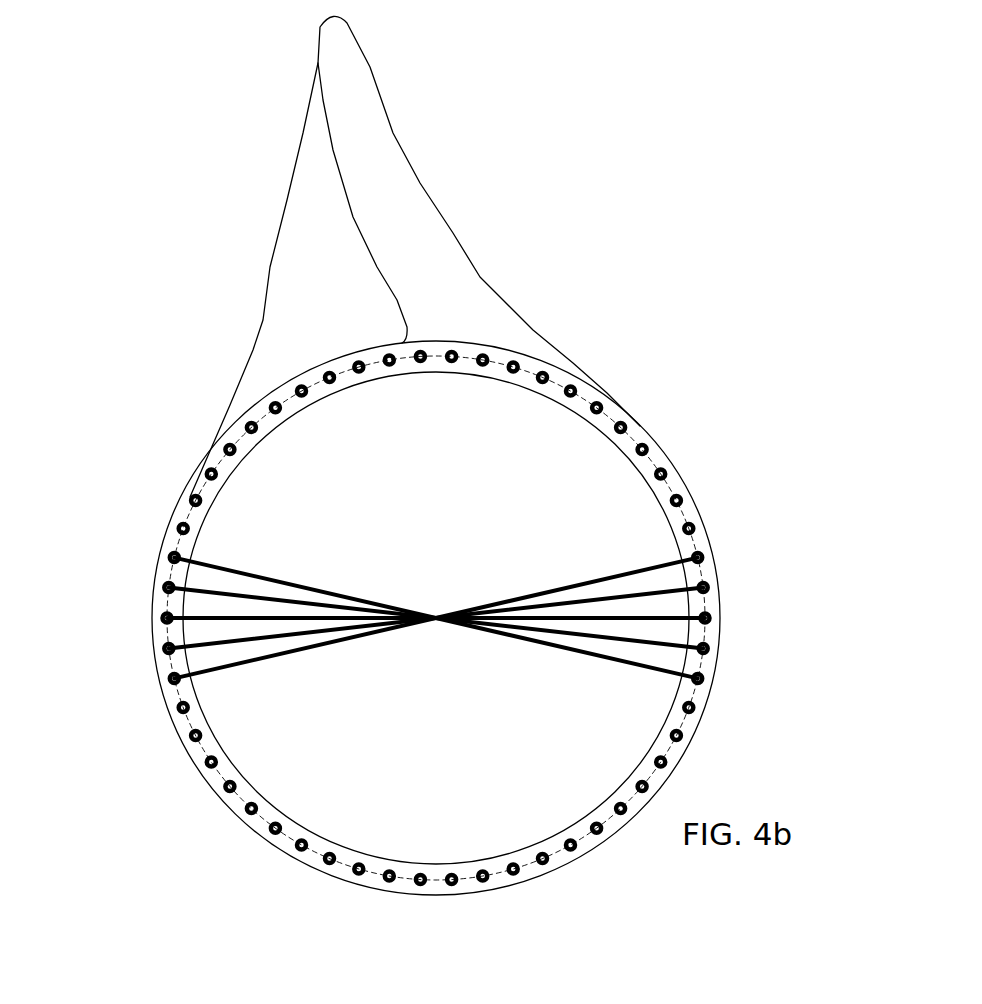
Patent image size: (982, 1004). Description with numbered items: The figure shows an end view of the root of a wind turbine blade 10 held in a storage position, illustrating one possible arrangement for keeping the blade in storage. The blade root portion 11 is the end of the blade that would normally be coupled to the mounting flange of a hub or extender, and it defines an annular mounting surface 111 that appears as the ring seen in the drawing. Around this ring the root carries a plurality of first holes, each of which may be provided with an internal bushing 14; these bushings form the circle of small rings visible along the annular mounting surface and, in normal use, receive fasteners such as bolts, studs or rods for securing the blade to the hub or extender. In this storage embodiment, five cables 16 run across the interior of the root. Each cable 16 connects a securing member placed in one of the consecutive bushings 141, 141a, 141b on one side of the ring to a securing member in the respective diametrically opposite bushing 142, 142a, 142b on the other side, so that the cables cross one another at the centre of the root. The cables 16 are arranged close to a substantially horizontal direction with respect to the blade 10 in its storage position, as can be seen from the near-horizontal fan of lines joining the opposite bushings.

The blade 10 is at (637, 318).
The blade root portion 11 is at (696, 492).
The annular mounting surface 111 is at (187, 728).
The internal bushing 14 is at (685, 733).
The bushing 141 is at (711, 617).
The bushing 141a is at (709, 648).
The bushing 141b is at (704, 679).
The diametrically opposite bushing 142 is at (160, 618).
The diametrically opposite bushing 142a is at (162, 587).
The diametrically opposite bushing 142b is at (168, 558).
The cable 16 is at (228, 568).